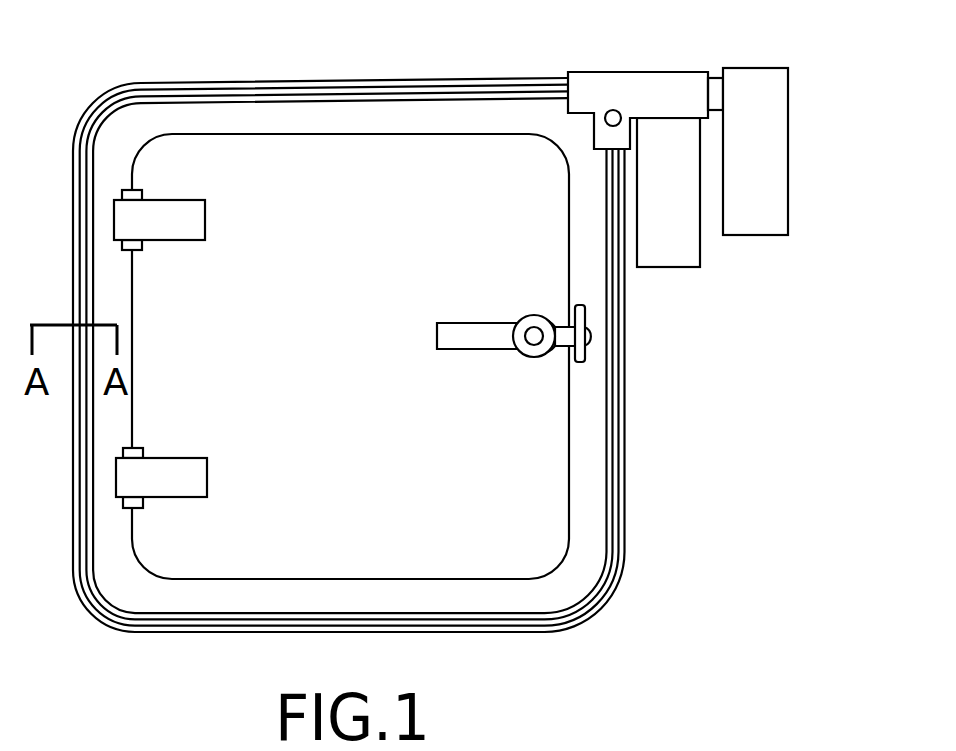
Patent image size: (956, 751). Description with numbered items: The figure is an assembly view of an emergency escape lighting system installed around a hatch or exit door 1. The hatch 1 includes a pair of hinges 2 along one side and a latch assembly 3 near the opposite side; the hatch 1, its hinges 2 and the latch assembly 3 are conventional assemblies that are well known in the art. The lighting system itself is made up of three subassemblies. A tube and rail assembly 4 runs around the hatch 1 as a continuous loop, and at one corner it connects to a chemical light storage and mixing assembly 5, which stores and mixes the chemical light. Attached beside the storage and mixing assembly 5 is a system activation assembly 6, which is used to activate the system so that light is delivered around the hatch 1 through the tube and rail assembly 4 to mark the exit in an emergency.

The hatch or exit door 1 is at (542, 481).
The hinges 2 is at (127, 218).
The latch assembly 3 is at (583, 333).
The tube and rail assembly 4 is at (423, 78).
The chemical light storage and mixing assembly 5 is at (653, 72).
The system activation assembly 6 is at (790, 202).